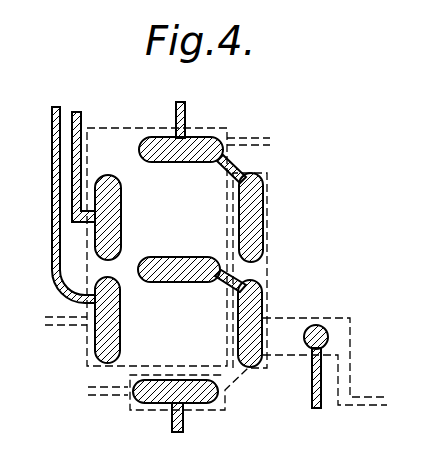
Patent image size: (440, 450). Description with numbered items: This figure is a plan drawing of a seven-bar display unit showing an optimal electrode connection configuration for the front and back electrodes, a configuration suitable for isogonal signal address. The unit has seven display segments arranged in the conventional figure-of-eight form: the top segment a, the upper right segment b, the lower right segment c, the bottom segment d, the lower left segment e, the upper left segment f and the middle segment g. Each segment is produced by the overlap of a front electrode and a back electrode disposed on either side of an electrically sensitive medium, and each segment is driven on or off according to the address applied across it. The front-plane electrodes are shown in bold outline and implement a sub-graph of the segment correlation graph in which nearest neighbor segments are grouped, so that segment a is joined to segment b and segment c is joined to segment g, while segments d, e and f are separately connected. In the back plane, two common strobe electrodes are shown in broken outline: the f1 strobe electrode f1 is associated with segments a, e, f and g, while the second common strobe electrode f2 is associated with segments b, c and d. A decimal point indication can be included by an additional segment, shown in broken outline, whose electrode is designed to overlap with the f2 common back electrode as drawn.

The display segment a is at (186, 150).
The display segment b is at (252, 227).
The display segment c is at (248, 327).
The display segment d is at (181, 392).
The display segment e is at (107, 318).
The display segment f is at (108, 197).
The display segment g is at (188, 270).
The f1 strobe electrode f1 is at (158, 230).
The f2 strobe electrode f2 is at (236, 394).